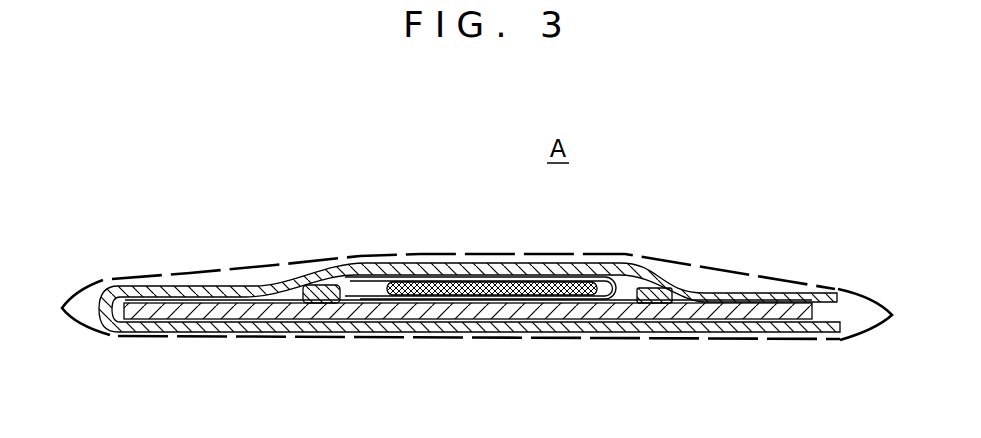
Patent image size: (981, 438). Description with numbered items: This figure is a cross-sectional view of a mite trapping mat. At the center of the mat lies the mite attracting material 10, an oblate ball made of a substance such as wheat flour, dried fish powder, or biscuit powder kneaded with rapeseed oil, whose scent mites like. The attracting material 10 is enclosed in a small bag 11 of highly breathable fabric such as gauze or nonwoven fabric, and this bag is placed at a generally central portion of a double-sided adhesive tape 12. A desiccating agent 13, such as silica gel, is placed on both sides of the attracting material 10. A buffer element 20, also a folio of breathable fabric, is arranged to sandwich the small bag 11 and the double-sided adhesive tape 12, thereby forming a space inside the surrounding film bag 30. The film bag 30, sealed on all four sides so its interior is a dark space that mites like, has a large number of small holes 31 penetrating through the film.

The mite attracting material 10 is at (486, 282).
The small bag 11 is at (624, 301).
The double-sided adhesive tape 12 is at (225, 313).
The desiccating agent 13 is at (326, 300).
The buffer element 20 is at (242, 287).
The film bag 30 is at (318, 273).
The small holes 31 is at (104, 277).